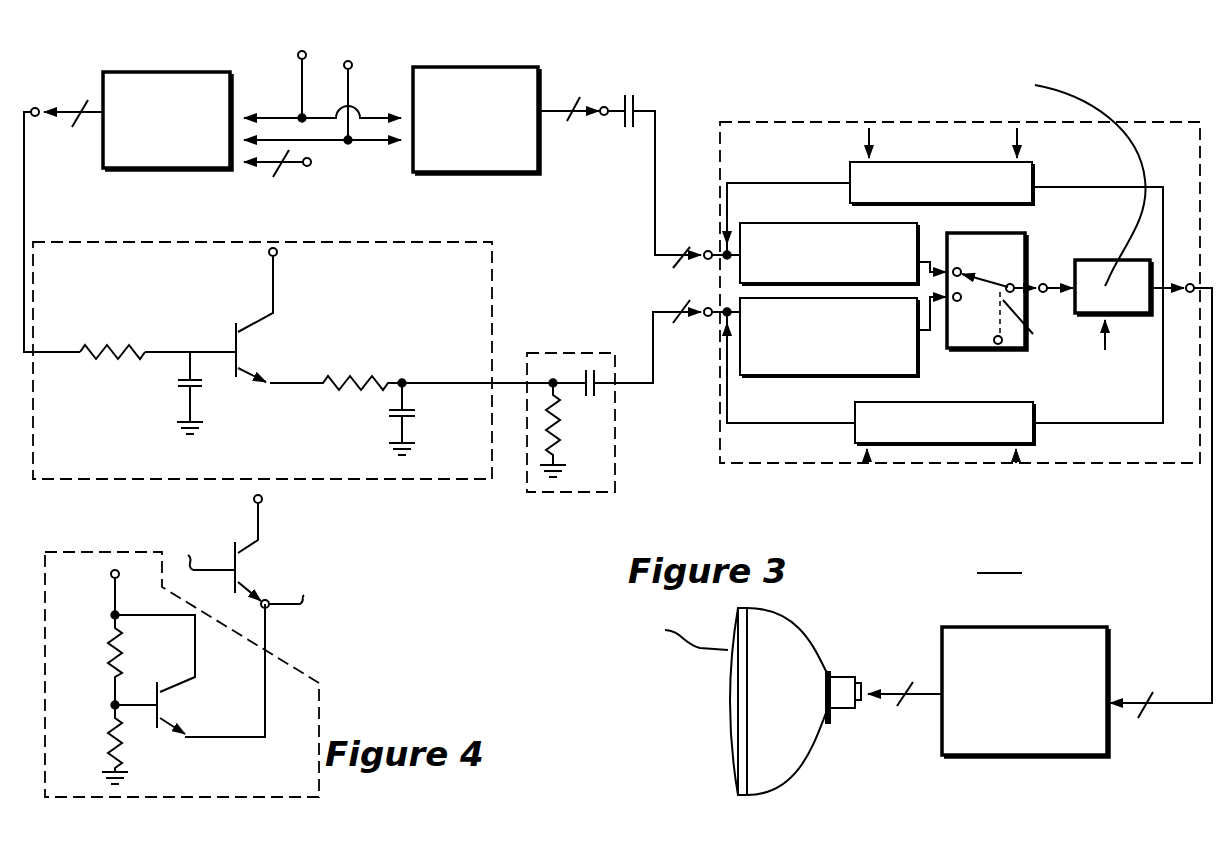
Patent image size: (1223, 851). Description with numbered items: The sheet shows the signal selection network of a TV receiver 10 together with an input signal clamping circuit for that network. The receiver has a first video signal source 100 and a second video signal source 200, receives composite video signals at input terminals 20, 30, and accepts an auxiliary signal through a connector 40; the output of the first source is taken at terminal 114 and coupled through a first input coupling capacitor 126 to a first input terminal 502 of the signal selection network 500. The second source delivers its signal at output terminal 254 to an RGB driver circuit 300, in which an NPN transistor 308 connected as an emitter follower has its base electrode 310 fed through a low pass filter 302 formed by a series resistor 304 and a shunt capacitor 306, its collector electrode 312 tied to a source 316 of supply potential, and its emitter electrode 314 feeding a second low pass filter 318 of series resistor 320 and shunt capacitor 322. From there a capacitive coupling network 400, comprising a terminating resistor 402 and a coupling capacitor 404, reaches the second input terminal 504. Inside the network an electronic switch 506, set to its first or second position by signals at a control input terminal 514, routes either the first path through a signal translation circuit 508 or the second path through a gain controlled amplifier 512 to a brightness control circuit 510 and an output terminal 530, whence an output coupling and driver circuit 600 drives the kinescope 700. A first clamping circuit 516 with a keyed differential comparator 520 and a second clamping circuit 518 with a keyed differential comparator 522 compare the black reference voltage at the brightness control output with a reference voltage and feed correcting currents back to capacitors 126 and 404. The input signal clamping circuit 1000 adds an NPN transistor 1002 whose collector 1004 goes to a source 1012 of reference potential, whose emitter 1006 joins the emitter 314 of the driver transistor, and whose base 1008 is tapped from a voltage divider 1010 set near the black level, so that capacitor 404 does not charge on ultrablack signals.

In FIG. 3, the TV receiver 10 is at (999, 560).
In FIG. 3, the input terminal 20 is at (298, 58).
In FIG. 3, the input terminal 30 is at (352, 67).
In FIG. 3, the EIA connector 40 is at (307, 168).
In FIG. 3, the first video signal source 100 is at (463, 76).
In FIG. 3, the output terminal of first signal source 114 is at (600, 104).
In FIG. 3, the first input coupling capacitor 126 is at (614, 84).
In FIG. 3, the second video signal source 200 is at (108, 72).
In FIG. 3, the output terminal 254 is at (55, 78).
In FIG. 3, the RGB driver circuit 300 is at (478, 252).
In FIG. 3, the low pass filter 302 is at (78, 392).
In FIG. 3, the series resistor 304 is at (110, 345).
In FIG. 3, the shunt capacitor 306 is at (180, 388).
In FIG. 3, the NPN transistor 308 is at (287, 336).
In FIG. 4, the NPN transistor 308 is at (294, 558).
In FIG. 3, the base electrode 310 is at (218, 356).
In FIG. 4, the base electrode 310 is at (207, 565).
In FIG. 3, the collector electrode 312 is at (258, 320).
In FIG. 4, the collector electrode 312 is at (240, 548).
In FIG. 3, the emitter electrode 314 is at (255, 370).
In FIG. 4, the emitter electrode 314 is at (290, 588).
In FIG. 3, the source of supply potential 316 is at (270, 250).
In FIG. 4, the source of supply potential 316 is at (254, 499).
In FIG. 3, the low pass filter circuit 318 is at (380, 362).
In FIG. 3, the series resistor 320 is at (355, 386).
In FIG. 3, the shunt capacitor 322 is at (410, 418).
In FIG. 3, the capacitive coupling network 400 is at (617, 460).
In FIG. 3, the terminating resistor 402 is at (548, 440).
In FIG. 3, the coupling capacitor 404 is at (597, 368).
In FIG. 3, the signal selection network 500 is at (1183, 130).
In FIG. 3, the first input terminal 502 is at (708, 250).
In FIG. 3, the second input terminal 504 is at (708, 320).
In FIG. 3, the electronic switch 506 is at (993, 246).
In FIG. 3, the signal translation circuit 508 is at (800, 207).
In FIG. 3, the brightness control circuit 510 is at (1092, 270).
In FIG. 3, the gain controlled amplifier 512 is at (822, 378).
In FIG. 3, the control input terminal 514 is at (994, 343).
In FIG. 3, the first clamping circuit 516 is at (1050, 176).
In FIG. 3, the second clamping circuit 518 is at (1080, 434).
In FIG. 3, the first keyed differential comparator 520 is at (848, 172).
In FIG. 3, the second keyed differential comparator 522 is at (948, 446).
In FIG. 3, the output terminal 530 is at (1190, 284).
In FIG. 3, the output coupling and driver circuit 600 is at (1072, 640).
In FIG. 3, the kinescope 700 is at (798, 652).
In FIG. 4, the input signal clamping circuit 1000 is at (300, 682).
In FIG. 4, the NPN transistor 1002 is at (175, 708).
In FIG. 4, the collector 1004 is at (178, 682).
In FIG. 4, the emitter 1006 is at (180, 742).
In FIG. 4, the base 1008 is at (140, 707).
In FIG. 4, the voltage divider 1010 is at (100, 705).
In FIG. 4, the source of reference potential 1012 is at (110, 573).